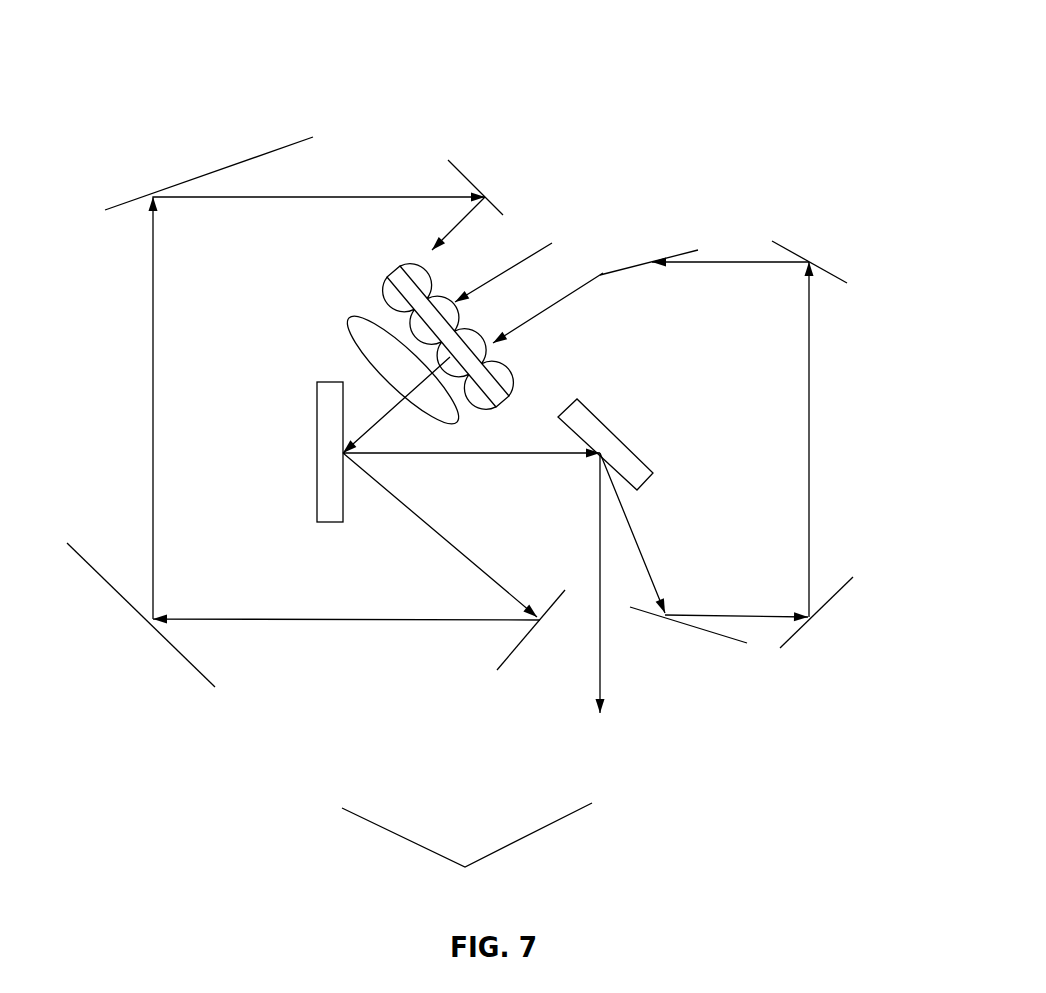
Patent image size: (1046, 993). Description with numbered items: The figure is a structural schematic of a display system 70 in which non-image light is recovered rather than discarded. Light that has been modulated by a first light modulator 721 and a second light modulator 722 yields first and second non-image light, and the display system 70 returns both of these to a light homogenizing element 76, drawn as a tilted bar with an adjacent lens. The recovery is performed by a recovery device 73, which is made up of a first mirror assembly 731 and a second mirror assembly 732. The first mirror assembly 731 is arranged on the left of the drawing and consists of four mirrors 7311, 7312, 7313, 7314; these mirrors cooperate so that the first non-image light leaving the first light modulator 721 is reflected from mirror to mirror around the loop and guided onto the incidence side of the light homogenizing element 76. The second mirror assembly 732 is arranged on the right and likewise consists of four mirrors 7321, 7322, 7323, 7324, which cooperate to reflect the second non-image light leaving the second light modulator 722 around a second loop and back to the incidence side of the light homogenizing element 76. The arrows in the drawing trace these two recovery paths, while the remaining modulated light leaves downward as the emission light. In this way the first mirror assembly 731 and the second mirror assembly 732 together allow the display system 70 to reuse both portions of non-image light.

The display system 70 is at (543, 50).
The light homogenizing element 76 is at (388, 275).
The first light modulator 721 is at (340, 407).
The second light modulator 722 is at (572, 410).
The recovery device 73 is at (467, 853).
The first mirror assembly 731 is at (297, 715).
The second mirror assembly 732 is at (708, 750).
The mirror 7311 is at (518, 642).
The mirror 7312 is at (178, 653).
The mirror 7313 is at (208, 170).
The mirror 7314 is at (462, 173).
The mirror 7321 is at (722, 637).
The mirror 7322 is at (836, 590).
The mirror 7323 is at (833, 272).
The mirror 7324 is at (610, 272).